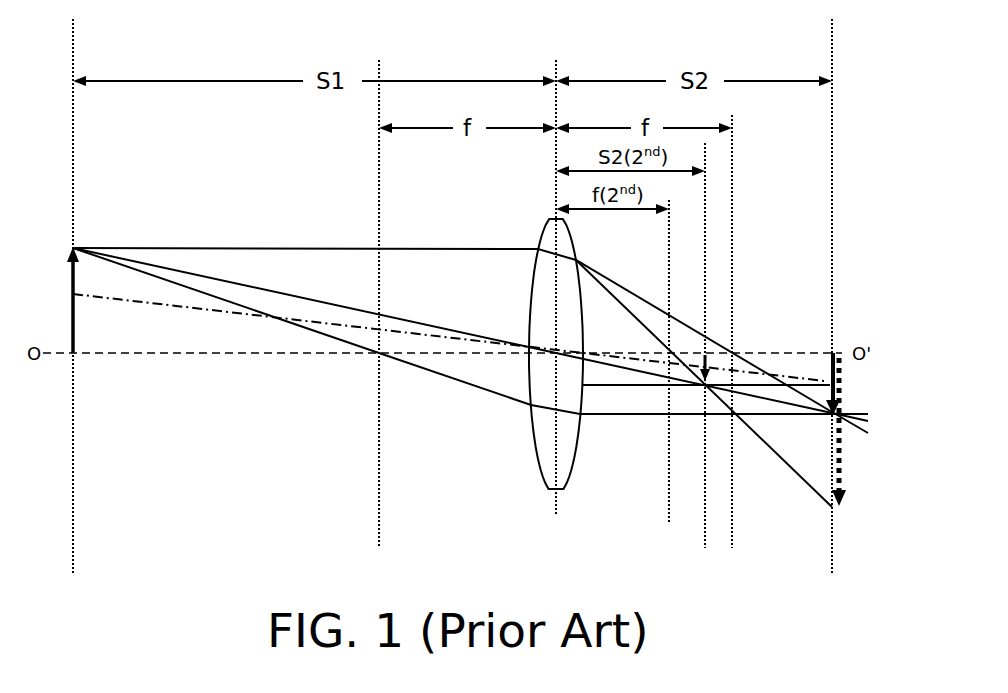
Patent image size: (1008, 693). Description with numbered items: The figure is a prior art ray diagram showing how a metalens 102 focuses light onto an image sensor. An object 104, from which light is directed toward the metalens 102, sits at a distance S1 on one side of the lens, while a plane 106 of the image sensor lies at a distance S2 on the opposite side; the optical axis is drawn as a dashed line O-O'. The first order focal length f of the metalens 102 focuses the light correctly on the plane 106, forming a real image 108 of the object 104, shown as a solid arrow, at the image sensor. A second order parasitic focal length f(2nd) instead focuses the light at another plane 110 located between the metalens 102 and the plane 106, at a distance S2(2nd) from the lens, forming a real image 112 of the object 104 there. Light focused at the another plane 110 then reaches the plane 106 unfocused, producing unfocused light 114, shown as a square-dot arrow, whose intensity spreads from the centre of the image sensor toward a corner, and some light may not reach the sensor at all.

The metalens 102 is at (530, 364).
The object 104 is at (54, 329).
The plane of the image sensor 106 is at (859, 296).
The real image 108 is at (853, 384).
The another plane 110 is at (669, 357).
The real image 112 is at (745, 341).
The unfocused light 114 is at (863, 454).